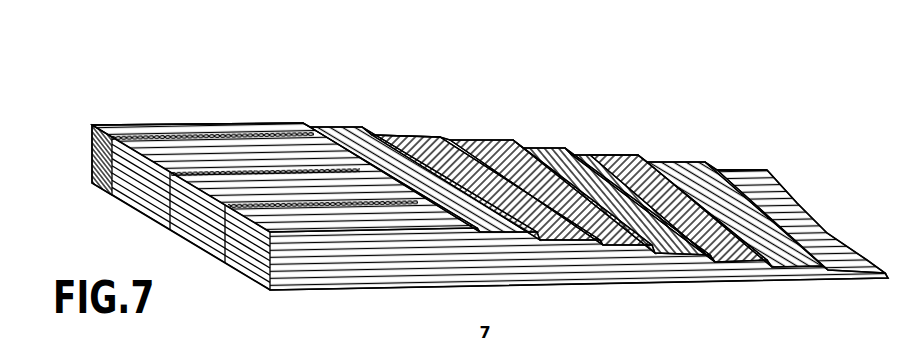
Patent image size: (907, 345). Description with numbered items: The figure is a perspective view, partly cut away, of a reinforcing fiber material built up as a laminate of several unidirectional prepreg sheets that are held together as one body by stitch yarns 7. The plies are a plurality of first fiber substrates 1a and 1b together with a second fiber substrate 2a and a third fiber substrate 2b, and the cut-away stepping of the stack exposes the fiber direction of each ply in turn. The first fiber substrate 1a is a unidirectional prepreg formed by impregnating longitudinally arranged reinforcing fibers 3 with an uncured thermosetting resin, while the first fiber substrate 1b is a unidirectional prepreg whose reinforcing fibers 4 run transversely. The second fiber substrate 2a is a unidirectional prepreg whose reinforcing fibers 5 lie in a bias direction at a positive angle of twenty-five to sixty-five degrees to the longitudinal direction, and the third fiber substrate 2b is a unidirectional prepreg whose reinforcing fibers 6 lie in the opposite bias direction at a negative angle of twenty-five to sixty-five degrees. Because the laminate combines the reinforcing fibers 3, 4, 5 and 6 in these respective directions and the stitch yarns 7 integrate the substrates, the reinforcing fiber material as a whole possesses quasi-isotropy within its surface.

The first fiber substrate 1a is at (226, 121).
The first fiber substrate 1b is at (477, 136).
The second fiber substrate 2a is at (331, 121).
The third fiber substrate 2b is at (429, 131).
The reinforcing fibers 3 is at (277, 136).
The reinforcing fibers 4 is at (522, 146).
The reinforcing fibers 5 is at (368, 133).
The reinforcing fibers 6 is at (413, 136).
The stitch yarns 7 is at (167, 134).